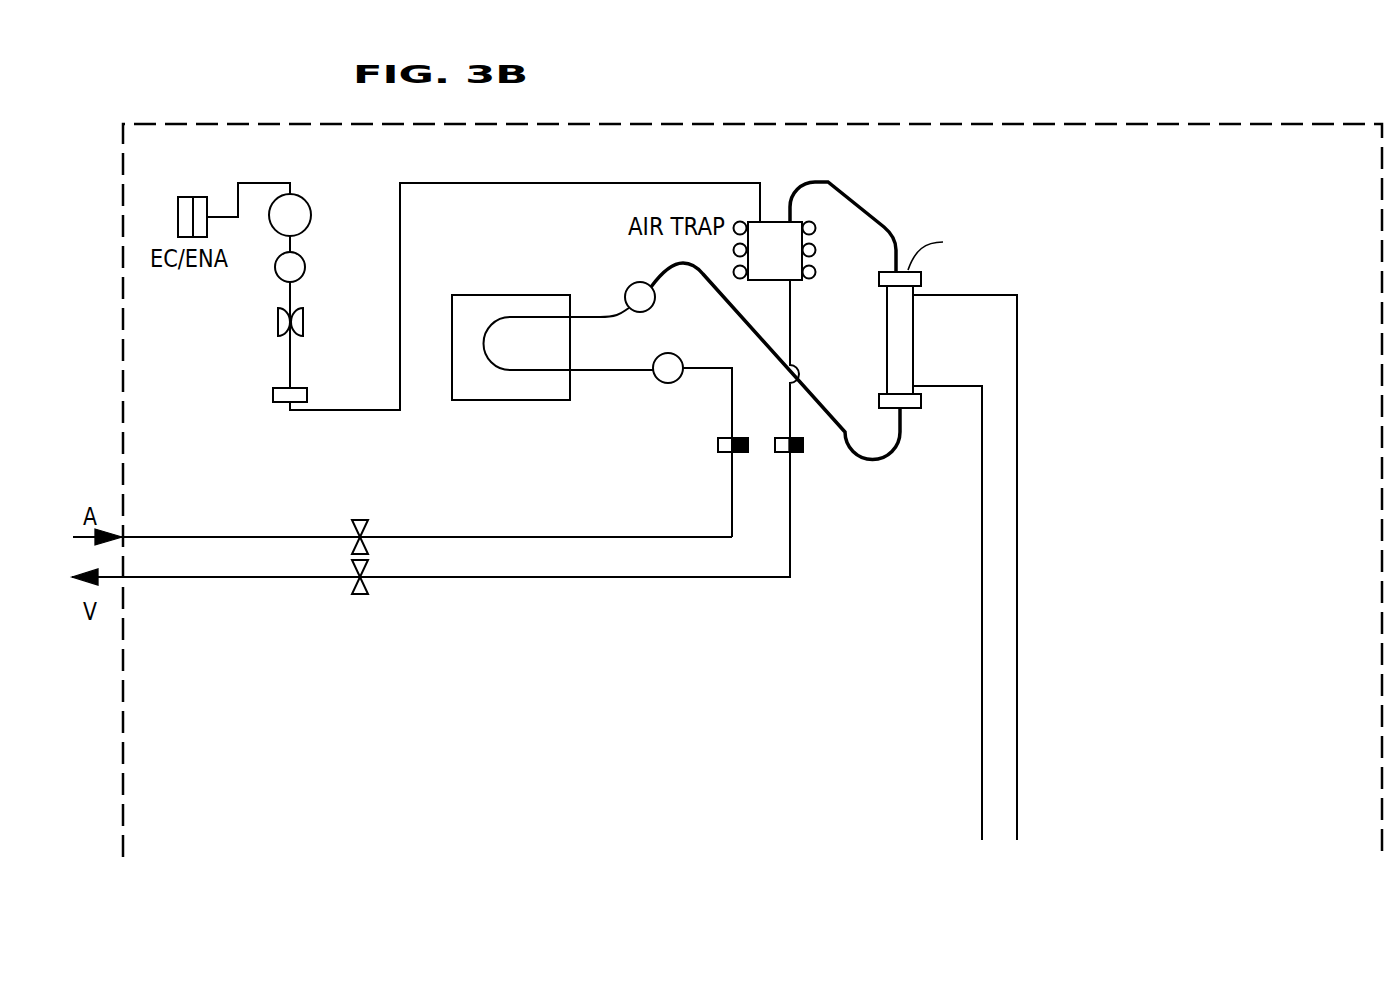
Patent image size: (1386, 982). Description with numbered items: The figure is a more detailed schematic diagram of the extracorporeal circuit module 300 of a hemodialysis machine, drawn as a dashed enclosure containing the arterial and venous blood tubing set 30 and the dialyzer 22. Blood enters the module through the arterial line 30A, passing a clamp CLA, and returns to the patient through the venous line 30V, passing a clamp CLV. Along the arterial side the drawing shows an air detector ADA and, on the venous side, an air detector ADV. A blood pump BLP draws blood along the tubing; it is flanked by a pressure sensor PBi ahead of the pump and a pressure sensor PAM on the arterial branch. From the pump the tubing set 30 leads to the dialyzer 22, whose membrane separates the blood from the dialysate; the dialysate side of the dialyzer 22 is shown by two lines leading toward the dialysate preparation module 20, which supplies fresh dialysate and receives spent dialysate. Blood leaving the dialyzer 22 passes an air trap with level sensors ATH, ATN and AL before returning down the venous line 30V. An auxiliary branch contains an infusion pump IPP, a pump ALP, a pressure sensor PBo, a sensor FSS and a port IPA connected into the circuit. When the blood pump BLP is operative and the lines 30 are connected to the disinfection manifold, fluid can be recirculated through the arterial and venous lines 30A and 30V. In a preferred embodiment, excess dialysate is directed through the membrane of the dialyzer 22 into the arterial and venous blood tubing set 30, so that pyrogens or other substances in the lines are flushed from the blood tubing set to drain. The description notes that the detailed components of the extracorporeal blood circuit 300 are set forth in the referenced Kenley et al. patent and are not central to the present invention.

The extracorporeal circuit module 300 is at (666, 493).
The arterial and venous blood tubing set 30 is at (869, 198).
The dialyzer 22 is at (887, 352).
The arterial line 30A is at (257, 533).
The venous line 30V is at (790, 543).
The dialysate preparation module 20 is at (973, 587).
The infusion pump IPP is at (172, 217).
The anticoagulant/infusion pump ALP is at (313, 215).
The pressure sensor PBo is at (312, 267).
The flow/level sensor FSS is at (264, 323).
The infusion port IPA is at (268, 395).
The blood pump BLP is at (542, 293).
The blood inlet pressure sensor PBi is at (660, 297).
The arterial pressure monitor PAM is at (670, 355).
The air trap high level sensor ATH is at (833, 227).
The air trap normal level sensor ATN is at (833, 249).
The air trap low level sensor AL is at (825, 274).
The arterial air detector ADA is at (712, 461).
The venous air detector ADV is at (807, 461).
The arterial line clamp CLA is at (381, 526).
The venous line clamp CLV is at (381, 588).